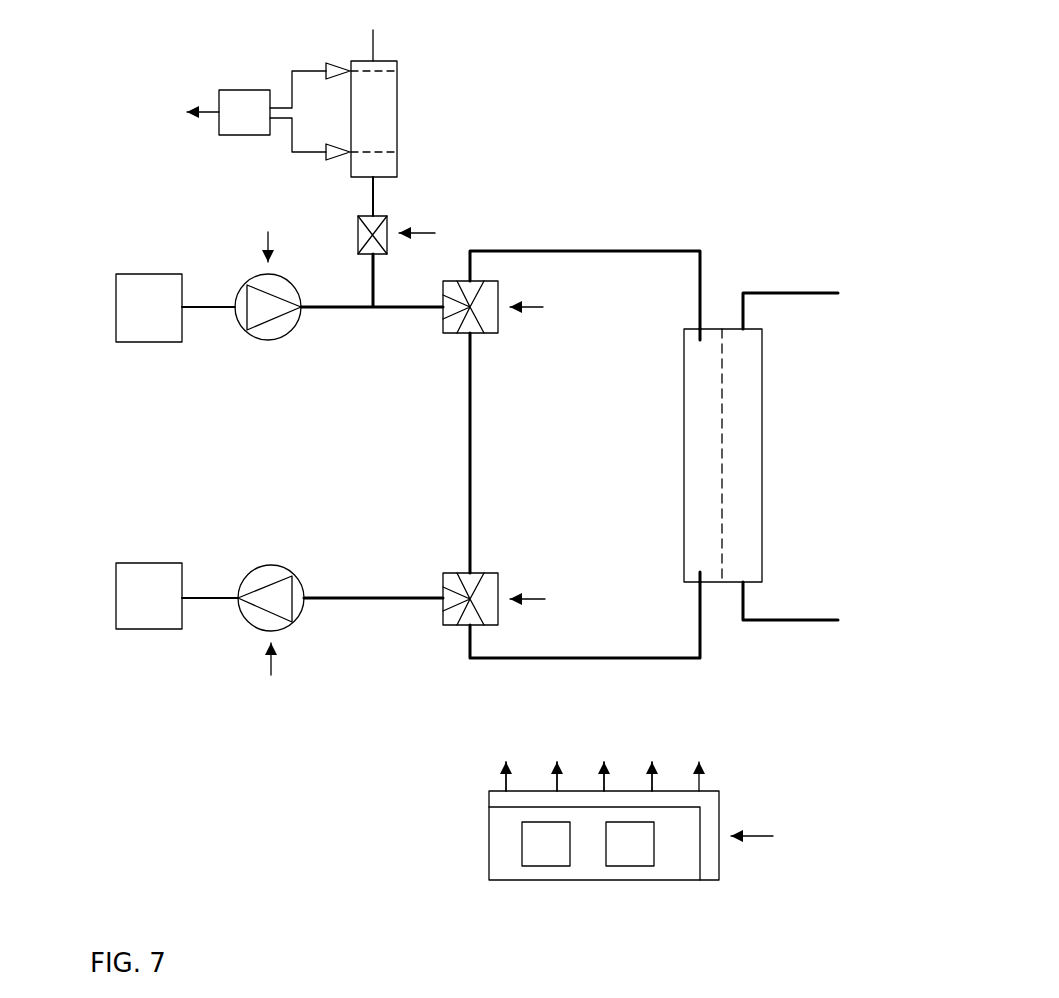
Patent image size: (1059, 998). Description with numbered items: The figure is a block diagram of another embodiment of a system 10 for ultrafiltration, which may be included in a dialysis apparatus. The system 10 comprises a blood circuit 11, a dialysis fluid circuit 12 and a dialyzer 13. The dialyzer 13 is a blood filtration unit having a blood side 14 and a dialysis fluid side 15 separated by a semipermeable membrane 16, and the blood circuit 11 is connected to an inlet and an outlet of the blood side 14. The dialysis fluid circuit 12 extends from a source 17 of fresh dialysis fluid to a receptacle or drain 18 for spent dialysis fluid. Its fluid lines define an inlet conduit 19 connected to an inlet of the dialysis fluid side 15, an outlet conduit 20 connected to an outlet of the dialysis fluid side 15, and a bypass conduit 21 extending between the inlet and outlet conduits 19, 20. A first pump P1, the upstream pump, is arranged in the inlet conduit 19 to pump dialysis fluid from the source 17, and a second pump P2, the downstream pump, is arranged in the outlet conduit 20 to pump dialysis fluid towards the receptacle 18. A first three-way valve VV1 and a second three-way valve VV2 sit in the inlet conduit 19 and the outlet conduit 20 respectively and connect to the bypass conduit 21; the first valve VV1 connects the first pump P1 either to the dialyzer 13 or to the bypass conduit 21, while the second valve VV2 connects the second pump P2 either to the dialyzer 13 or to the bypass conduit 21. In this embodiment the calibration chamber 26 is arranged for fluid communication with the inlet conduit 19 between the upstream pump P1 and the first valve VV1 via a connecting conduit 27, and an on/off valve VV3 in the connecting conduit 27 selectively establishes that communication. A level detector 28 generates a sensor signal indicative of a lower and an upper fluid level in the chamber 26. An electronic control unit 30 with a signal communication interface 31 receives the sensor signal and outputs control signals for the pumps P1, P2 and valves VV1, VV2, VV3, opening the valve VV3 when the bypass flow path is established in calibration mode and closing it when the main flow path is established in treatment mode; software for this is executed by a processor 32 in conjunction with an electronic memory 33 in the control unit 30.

The system for ultrafiltration 10 is at (692, 115).
The blood circuit 11 is at (762, 687).
The dialysis fluid circuit 12 is at (368, 697).
The dialyzer 13 is at (684, 393).
The blood side 14 is at (743, 492).
The dialysis fluid side 15 is at (700, 490).
The semipermeable membrane 16 is at (722, 398).
The source of fresh dialysis fluid 17 is at (143, 274).
The receptacle or drain for spent dialysis fluid 18 is at (157, 629).
The inlet conduit 19 is at (403, 310).
The outlet conduit 20 is at (418, 600).
The bypass conduit 21 is at (470, 398).
The calibration chamber 26 is at (397, 118).
The connecting conduit 27 is at (373, 198).
The level detector 28 is at (257, 90).
The electronic control unit 30 is at (477, 836).
The signal communication interface 31 is at (700, 800).
The processor 32 is at (548, 857).
The electronic memory 33 is at (632, 857).
The first pump P1 is at (288, 333).
The second pump P2 is at (288, 625).
The first three-way valve VV1 is at (498, 323).
The second three-way valve VV2 is at (498, 578).
The on/off valve VV3 is at (358, 240).